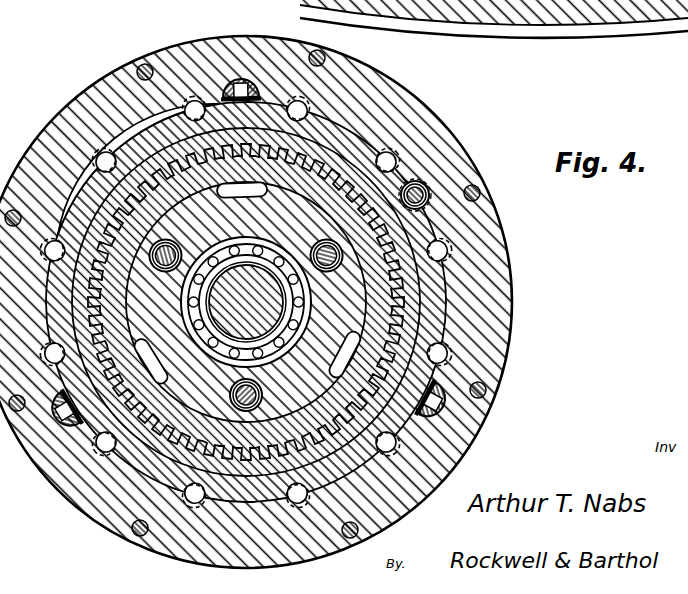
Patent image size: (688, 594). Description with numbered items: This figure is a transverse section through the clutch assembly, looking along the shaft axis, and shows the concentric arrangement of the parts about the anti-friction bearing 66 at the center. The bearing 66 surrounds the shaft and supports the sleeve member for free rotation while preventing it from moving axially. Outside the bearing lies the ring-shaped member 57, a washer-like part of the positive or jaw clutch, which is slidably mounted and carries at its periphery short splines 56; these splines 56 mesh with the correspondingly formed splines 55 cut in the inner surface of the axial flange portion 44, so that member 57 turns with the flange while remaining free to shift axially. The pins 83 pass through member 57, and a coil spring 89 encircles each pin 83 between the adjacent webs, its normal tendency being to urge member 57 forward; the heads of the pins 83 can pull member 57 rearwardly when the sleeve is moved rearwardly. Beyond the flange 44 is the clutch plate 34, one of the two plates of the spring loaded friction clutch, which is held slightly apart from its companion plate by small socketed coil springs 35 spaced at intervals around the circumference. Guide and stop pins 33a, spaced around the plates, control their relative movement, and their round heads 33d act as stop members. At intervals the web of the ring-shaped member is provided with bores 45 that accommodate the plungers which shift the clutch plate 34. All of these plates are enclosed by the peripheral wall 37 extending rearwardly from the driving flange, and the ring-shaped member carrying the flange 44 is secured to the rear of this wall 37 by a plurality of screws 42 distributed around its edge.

The peripheral wall 37 is at (395, 108).
The coil springs 35 is at (384, 153).
The guide and stop pins 33a is at (421, 184).
The round heads 33d is at (430, 195).
The screws 42 is at (481, 192).
The clutch plate 34 is at (430, 270).
The splines 55 is at (404, 300).
The splines 56 is at (404, 312).
The axial flange portion 44 is at (412, 366).
The bores 45 is at (442, 407).
The ring-shaped member 57 is at (155, 385).
The anti-friction bearing 66 is at (212, 357).
The coil spring 89 is at (240, 407).
The pins 83 is at (243, 407).